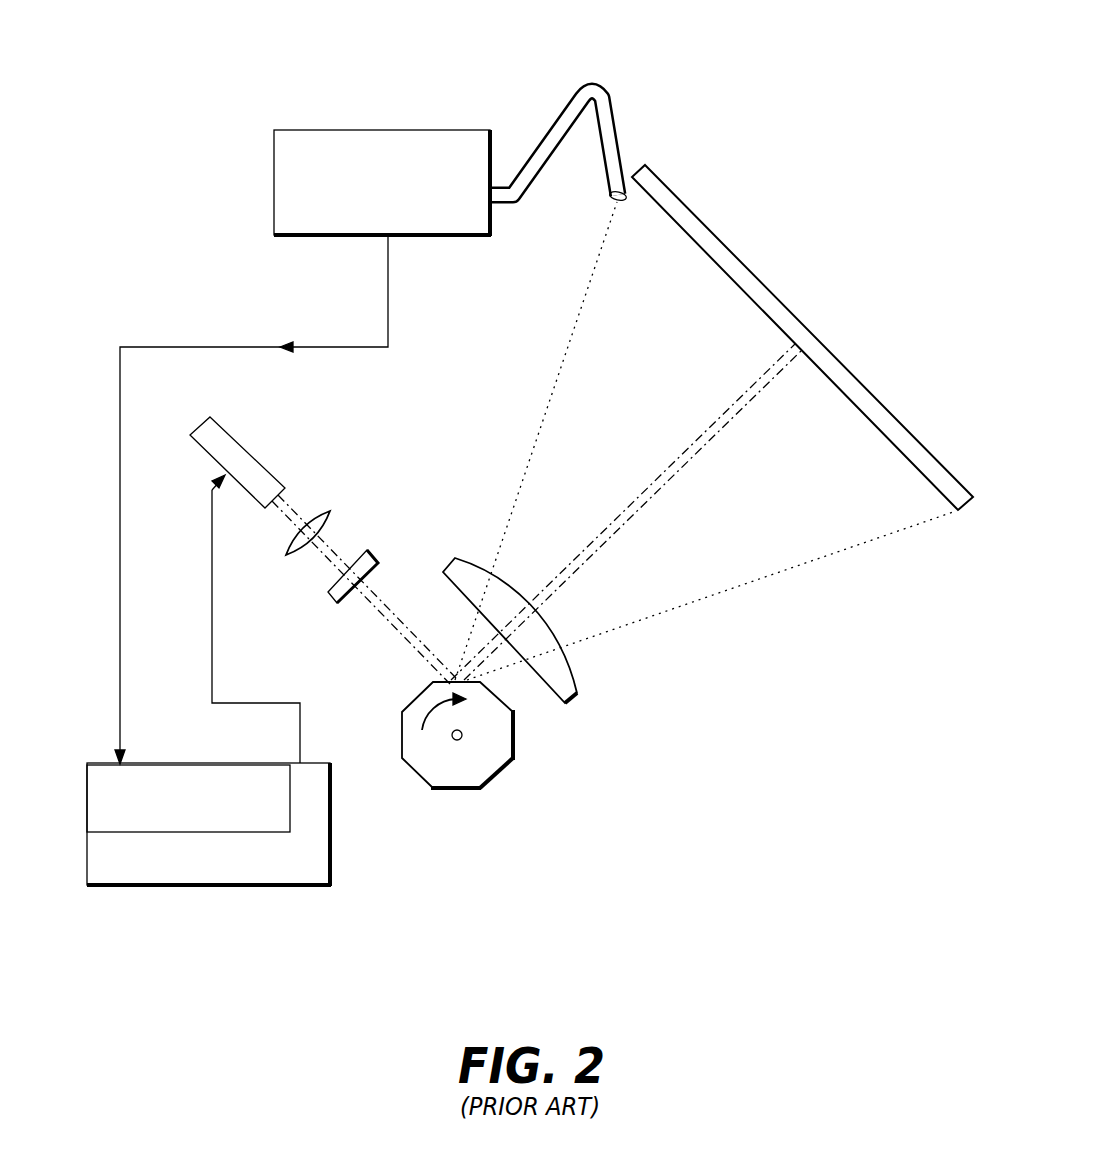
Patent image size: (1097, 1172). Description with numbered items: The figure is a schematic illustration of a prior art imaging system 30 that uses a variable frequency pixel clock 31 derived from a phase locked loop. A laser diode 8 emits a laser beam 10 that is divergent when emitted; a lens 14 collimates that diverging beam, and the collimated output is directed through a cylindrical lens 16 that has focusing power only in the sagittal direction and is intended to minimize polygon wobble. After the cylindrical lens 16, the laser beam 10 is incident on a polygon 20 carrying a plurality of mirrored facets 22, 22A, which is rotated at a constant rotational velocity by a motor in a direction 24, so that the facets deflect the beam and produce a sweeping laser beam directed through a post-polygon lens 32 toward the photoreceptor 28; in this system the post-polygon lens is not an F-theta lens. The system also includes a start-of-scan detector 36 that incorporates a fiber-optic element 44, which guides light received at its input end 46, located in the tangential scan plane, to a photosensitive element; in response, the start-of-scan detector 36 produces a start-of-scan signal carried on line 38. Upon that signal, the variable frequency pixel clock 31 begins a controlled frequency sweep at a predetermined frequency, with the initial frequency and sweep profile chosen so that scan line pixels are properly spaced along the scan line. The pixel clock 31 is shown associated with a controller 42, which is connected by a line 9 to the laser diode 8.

The laser diode 8 is at (230, 451).
The laser control line 9 is at (212, 577).
The laser beam 10 is at (293, 512).
The lens 14 is at (331, 514).
The cylindrical lens 16 is at (345, 594).
The polygon 20 is at (479, 760).
The mirrored facets 22 is at (514, 738).
The polygon facet 22A is at (455, 790).
The direction 24 is at (422, 723).
The photoreceptor 28 is at (748, 277).
The imaging system 30 is at (689, 74).
The variable frequency pixel clock 31 is at (166, 772).
The f-theta lens 32 is at (570, 685).
The start-of-scan detector 36 is at (388, 128).
The start of scan signal line 38 is at (120, 395).
The controller 42 is at (209, 824).
The fiber-optic element 44 is at (538, 140).
The input ends 46 is at (607, 201).